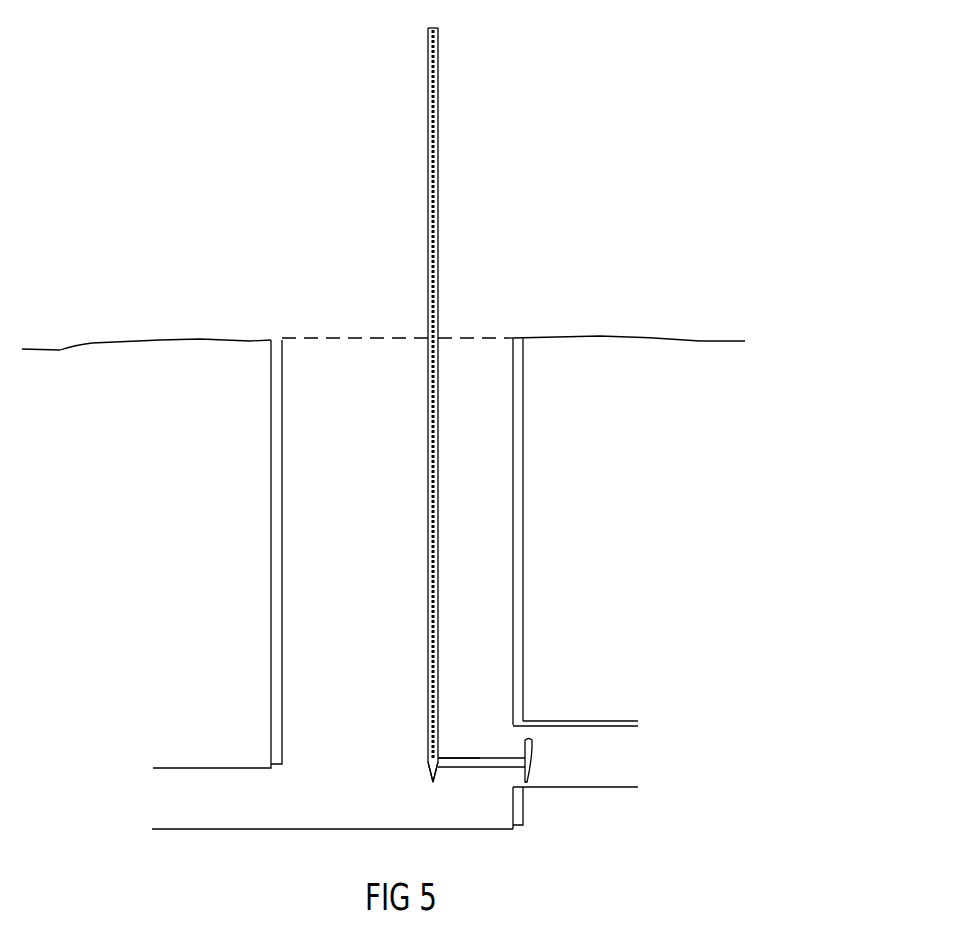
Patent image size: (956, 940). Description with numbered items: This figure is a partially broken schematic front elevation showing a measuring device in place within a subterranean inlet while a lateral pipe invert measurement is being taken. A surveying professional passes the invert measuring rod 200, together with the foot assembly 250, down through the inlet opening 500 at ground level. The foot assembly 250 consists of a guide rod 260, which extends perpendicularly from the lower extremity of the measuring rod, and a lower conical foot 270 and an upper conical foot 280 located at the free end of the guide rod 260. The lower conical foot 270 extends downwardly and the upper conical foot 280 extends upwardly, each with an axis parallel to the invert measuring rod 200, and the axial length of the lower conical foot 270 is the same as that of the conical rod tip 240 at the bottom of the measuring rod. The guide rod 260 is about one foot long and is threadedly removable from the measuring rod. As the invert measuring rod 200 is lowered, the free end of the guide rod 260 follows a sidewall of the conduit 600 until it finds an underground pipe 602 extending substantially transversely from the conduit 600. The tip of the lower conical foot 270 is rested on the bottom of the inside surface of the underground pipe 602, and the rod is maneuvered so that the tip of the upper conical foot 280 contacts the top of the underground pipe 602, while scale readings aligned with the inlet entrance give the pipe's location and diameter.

The invert measuring rod 200 is at (405, 145).
The conical rod tip 240 is at (428, 778).
The foot assembly 250 is at (472, 742).
The guide rod 260 is at (492, 770).
The lower conical foot 270 is at (528, 781).
The upper conical foot 280 is at (532, 740).
The inlet opening 500 is at (480, 335).
The conduit 600 is at (518, 480).
The underground pipe 602 is at (607, 722).